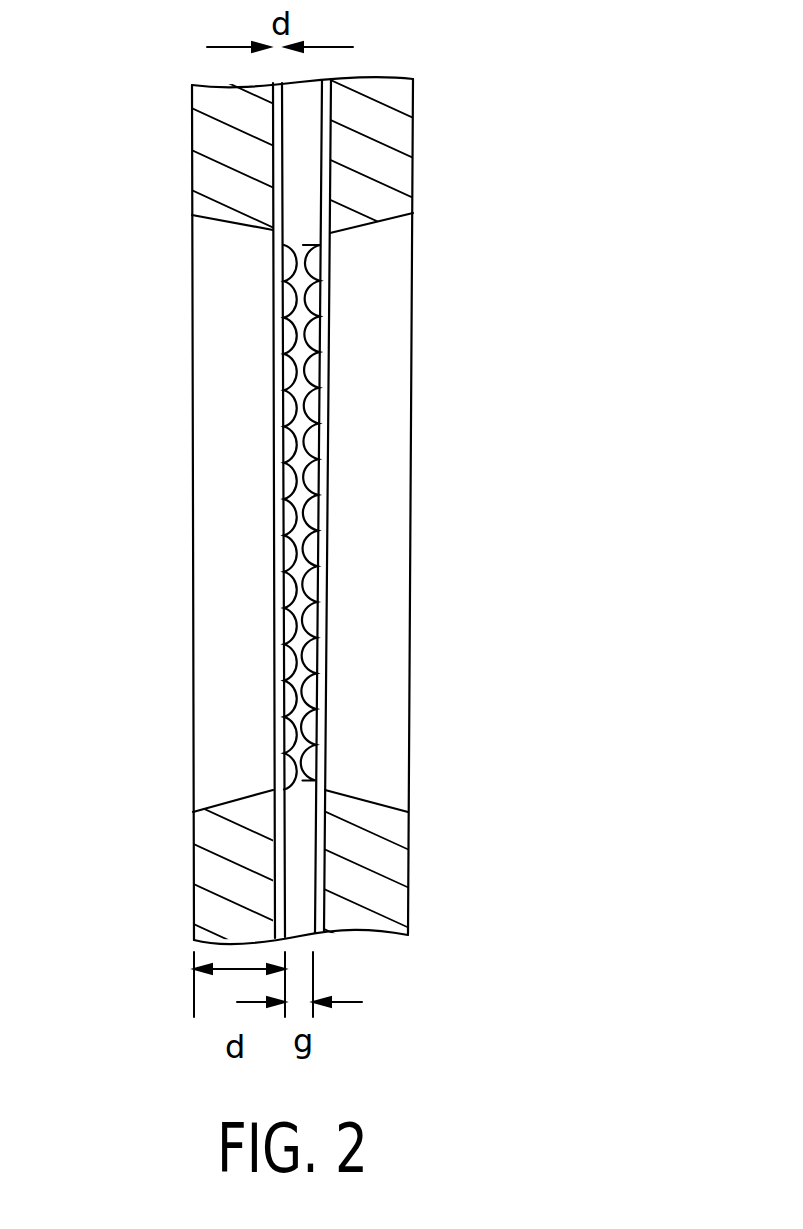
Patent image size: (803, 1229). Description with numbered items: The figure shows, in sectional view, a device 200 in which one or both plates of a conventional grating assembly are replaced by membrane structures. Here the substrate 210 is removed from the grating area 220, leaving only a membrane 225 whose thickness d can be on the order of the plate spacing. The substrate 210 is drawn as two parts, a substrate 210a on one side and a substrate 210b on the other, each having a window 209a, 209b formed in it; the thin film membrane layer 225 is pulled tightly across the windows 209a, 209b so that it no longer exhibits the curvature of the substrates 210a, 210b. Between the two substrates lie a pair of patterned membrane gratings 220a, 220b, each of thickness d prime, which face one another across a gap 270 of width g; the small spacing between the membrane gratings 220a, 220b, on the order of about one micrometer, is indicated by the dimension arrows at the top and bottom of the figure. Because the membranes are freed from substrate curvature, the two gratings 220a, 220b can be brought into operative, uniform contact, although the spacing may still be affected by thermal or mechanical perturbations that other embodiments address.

The electrode assembly 200 is at (553, 868).
The substrate 210 is at (266, 534).
The substrate 210a is at (392, 270).
The substrate 210b is at (212, 253).
The grating area 220 is at (301, 508).
The membrane grating 220a is at (312, 385).
The membrane grating 220b is at (285, 403).
The window 209a is at (462, 648).
The window 209b is at (162, 640).
The membrane 225 is at (280, 812).
The gap channel 270 is at (297, 142).